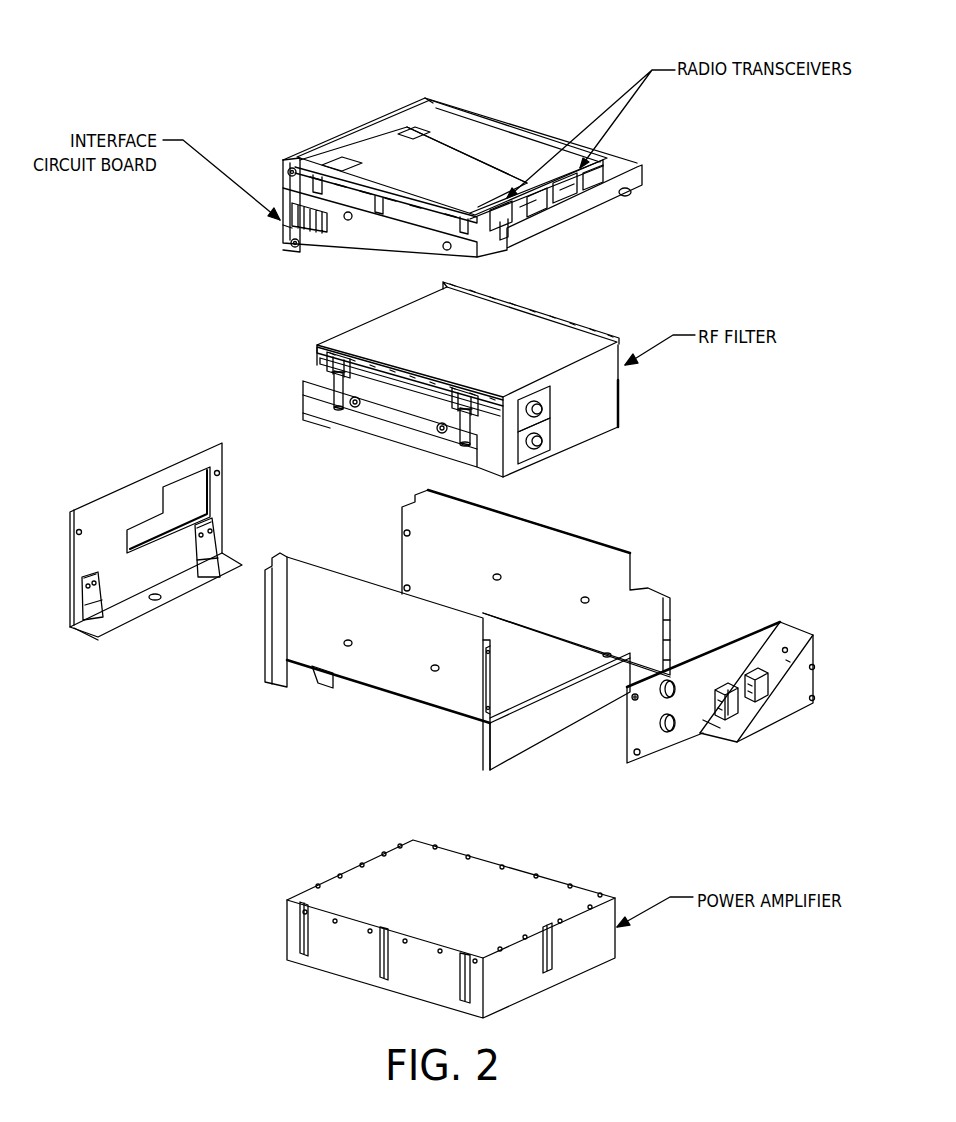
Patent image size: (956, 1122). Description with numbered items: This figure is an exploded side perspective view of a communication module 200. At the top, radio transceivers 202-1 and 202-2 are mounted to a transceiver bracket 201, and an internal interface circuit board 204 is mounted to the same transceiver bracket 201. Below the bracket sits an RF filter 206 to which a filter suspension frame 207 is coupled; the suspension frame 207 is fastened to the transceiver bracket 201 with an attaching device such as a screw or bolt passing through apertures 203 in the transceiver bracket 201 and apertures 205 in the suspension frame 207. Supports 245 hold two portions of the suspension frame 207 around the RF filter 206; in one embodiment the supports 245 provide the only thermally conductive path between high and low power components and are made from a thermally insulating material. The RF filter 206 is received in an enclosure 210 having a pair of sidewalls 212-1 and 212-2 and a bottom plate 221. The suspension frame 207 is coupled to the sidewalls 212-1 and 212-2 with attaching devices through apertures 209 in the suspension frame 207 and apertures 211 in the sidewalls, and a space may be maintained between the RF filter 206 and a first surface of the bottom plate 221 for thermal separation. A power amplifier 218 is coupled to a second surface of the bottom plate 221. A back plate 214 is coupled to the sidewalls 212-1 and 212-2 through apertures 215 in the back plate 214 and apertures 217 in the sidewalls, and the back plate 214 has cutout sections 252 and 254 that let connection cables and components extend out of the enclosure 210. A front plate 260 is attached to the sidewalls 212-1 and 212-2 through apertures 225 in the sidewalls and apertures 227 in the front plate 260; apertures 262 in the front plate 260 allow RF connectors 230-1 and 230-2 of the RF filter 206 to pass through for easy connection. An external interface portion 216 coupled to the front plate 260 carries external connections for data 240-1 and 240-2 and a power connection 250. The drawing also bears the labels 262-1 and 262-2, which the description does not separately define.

The module 200 is at (748, 158).
The transceiver bracket 201 is at (585, 211).
The radio transceiver 202-1 is at (422, 167).
The radio transceiver 202-2 is at (513, 145).
The apertures 203 is at (447, 250).
The internal interface circuit board 204 is at (282, 236).
The apertures 205 is at (357, 363).
The RF filter 206 is at (583, 348).
The filter suspension frame 207 is at (318, 355).
The apertures 209 is at (355, 408).
The enclosure 210 is at (653, 560).
The apertures 211 is at (583, 597).
The sidewall 212-1 is at (278, 632).
The sidewall 212-2 is at (517, 540).
The back plate 214 is at (87, 553).
The apertures 215 is at (70, 530).
The external interface portion 216 is at (782, 631).
The apertures 217 is at (415, 586).
The power amplifier 218 is at (500, 892).
The bottom plate 221 is at (507, 658).
The apertures 225 is at (488, 652).
The apertures 227 is at (632, 698).
The RF connector 230-1 is at (553, 407).
The RF connector 230-2 is at (530, 456).
The external connection for data 240-1 is at (750, 732).
The external connection for data 240-2 is at (762, 712).
The supports 245 is at (318, 390).
The power connection 250 is at (815, 704).
The cutout section 252 is at (183, 492).
The cutout section 254 is at (147, 603).
The front plate 260 is at (470, 453).
The apertures 262 is at (672, 718).
The rail 262-1 is at (430, 380).
The rail 262-2 is at (533, 306).